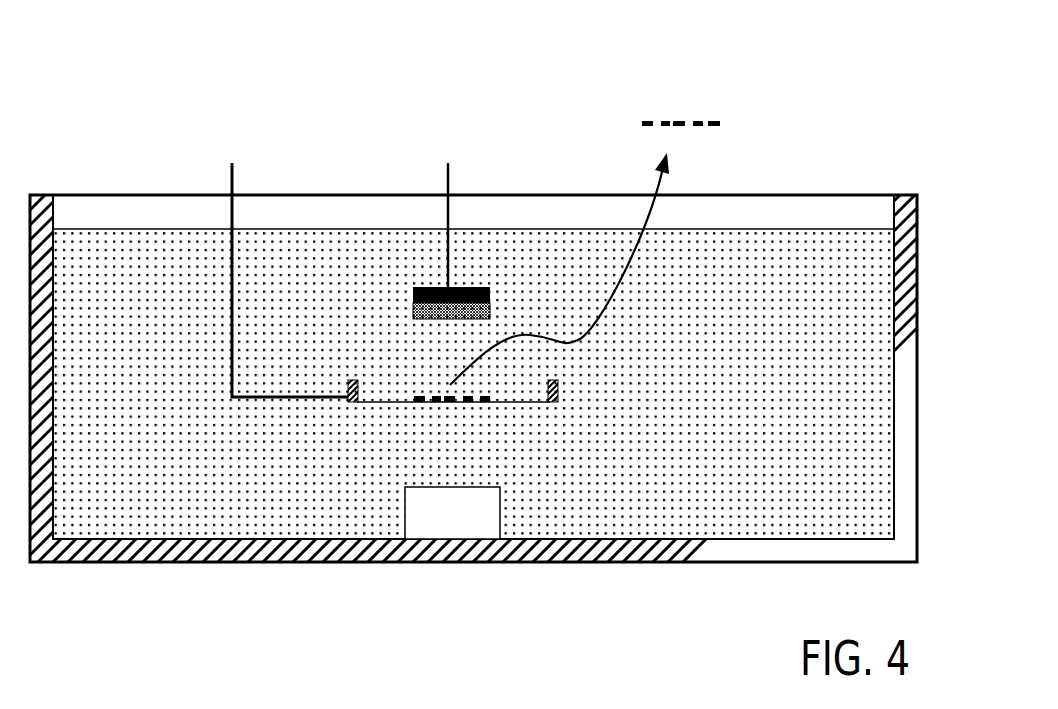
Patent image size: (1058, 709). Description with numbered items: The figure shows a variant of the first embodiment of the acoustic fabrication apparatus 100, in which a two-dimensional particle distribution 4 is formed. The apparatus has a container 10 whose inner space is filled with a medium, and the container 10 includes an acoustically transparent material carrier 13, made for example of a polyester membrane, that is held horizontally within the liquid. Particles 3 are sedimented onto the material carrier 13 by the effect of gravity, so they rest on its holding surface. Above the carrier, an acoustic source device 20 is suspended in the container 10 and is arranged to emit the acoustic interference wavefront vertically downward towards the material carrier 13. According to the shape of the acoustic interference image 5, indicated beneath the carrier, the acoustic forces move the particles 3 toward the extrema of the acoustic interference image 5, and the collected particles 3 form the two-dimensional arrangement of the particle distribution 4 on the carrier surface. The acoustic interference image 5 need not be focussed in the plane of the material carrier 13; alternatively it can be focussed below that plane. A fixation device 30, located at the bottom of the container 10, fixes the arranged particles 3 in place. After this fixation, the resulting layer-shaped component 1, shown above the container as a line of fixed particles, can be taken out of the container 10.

The layer-shaped component 1 is at (641, 123).
The particles 3 is at (480, 390).
The particle distribution 4 is at (430, 397).
The acoustic interference image 5 is at (411, 418).
The container 10 is at (872, 526).
The material carrier 13 is at (558, 392).
The acoustic source device 20 is at (462, 152).
The fixation device 30 is at (490, 531).
The acoustic fabrication apparatus 100 is at (525, 313).